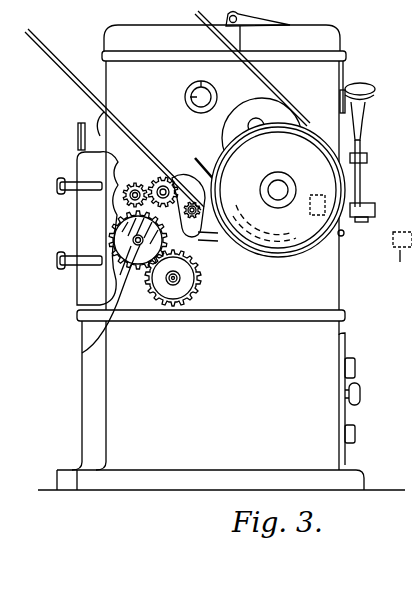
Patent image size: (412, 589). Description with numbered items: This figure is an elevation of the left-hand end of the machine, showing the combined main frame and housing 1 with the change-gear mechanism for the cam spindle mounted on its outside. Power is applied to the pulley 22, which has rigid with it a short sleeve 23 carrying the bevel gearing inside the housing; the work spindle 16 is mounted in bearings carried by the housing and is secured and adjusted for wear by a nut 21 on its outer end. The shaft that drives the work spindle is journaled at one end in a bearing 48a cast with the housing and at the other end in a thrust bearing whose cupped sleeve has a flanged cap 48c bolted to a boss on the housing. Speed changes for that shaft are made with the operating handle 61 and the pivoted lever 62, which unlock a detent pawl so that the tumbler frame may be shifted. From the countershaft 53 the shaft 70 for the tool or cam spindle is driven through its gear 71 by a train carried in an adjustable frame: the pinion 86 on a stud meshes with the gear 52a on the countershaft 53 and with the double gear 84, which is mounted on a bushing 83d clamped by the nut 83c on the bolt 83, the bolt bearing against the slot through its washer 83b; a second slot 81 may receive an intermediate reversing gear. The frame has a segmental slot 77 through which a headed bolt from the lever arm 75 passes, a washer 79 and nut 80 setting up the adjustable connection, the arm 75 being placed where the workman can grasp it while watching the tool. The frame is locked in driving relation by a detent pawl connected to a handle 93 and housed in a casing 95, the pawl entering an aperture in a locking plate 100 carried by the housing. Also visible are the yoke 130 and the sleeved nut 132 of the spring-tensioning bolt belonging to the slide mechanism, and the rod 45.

The combined main frame and housing 1 is at (221, 251).
The work spindle 16 is at (198, 97).
The nut 21 is at (184, 93).
The pulley 22 is at (292, 253).
The short sleeve 23 is at (288, 189).
The rod 45 is at (361, 184).
The bearing 48a is at (98, 124).
The flanged cap 48c is at (78, 137).
The gear 52a is at (165, 186).
The countershaft 53 is at (168, 190).
The operating handle 61 is at (373, 89).
The lever 62 is at (374, 101).
The shaft 70 is at (181, 284).
The gear 71 is at (173, 300).
The lever arm 75 is at (217, 207).
The segmental slot 77 is at (214, 182).
The washer 79 is at (198, 240).
The nut 80 is at (203, 196).
The slot 81 is at (110, 203).
The bolt 83 is at (130, 245).
The washer 83b is at (97, 228).
The nut 83c is at (132, 239).
The bushing 83d is at (90, 303).
The double gear 84 is at (62, 261).
The gear or pinion 86 is at (134, 183).
The handle 93 is at (376, 205).
The casing 95 is at (344, 228).
The locking plate 100 is at (309, 213).
The yoke 130 is at (396, 280).
The nut 132 is at (406, 248).